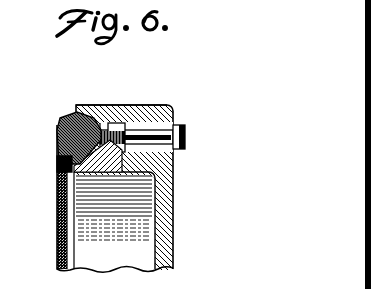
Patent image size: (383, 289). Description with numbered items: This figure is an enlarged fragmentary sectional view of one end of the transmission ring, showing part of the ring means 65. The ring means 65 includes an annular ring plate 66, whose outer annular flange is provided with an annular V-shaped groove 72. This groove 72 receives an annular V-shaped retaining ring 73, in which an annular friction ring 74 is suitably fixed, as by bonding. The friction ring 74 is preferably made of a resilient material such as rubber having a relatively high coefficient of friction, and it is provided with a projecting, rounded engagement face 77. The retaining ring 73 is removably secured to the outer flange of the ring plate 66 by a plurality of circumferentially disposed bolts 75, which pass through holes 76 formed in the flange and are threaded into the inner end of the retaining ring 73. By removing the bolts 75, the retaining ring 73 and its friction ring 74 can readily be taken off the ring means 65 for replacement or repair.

The ring means 65 is at (178, 212).
The annular ring plate 66 is at (165, 254).
The annular V-shaped groove 72 is at (87, 104).
The annular V-shaped retaining ring 73 is at (77, 117).
The annular friction ring 74 is at (62, 131).
The bolts 75 is at (142, 137).
The holes 76 is at (186, 135).
The rounded engagement face 77 is at (62, 143).